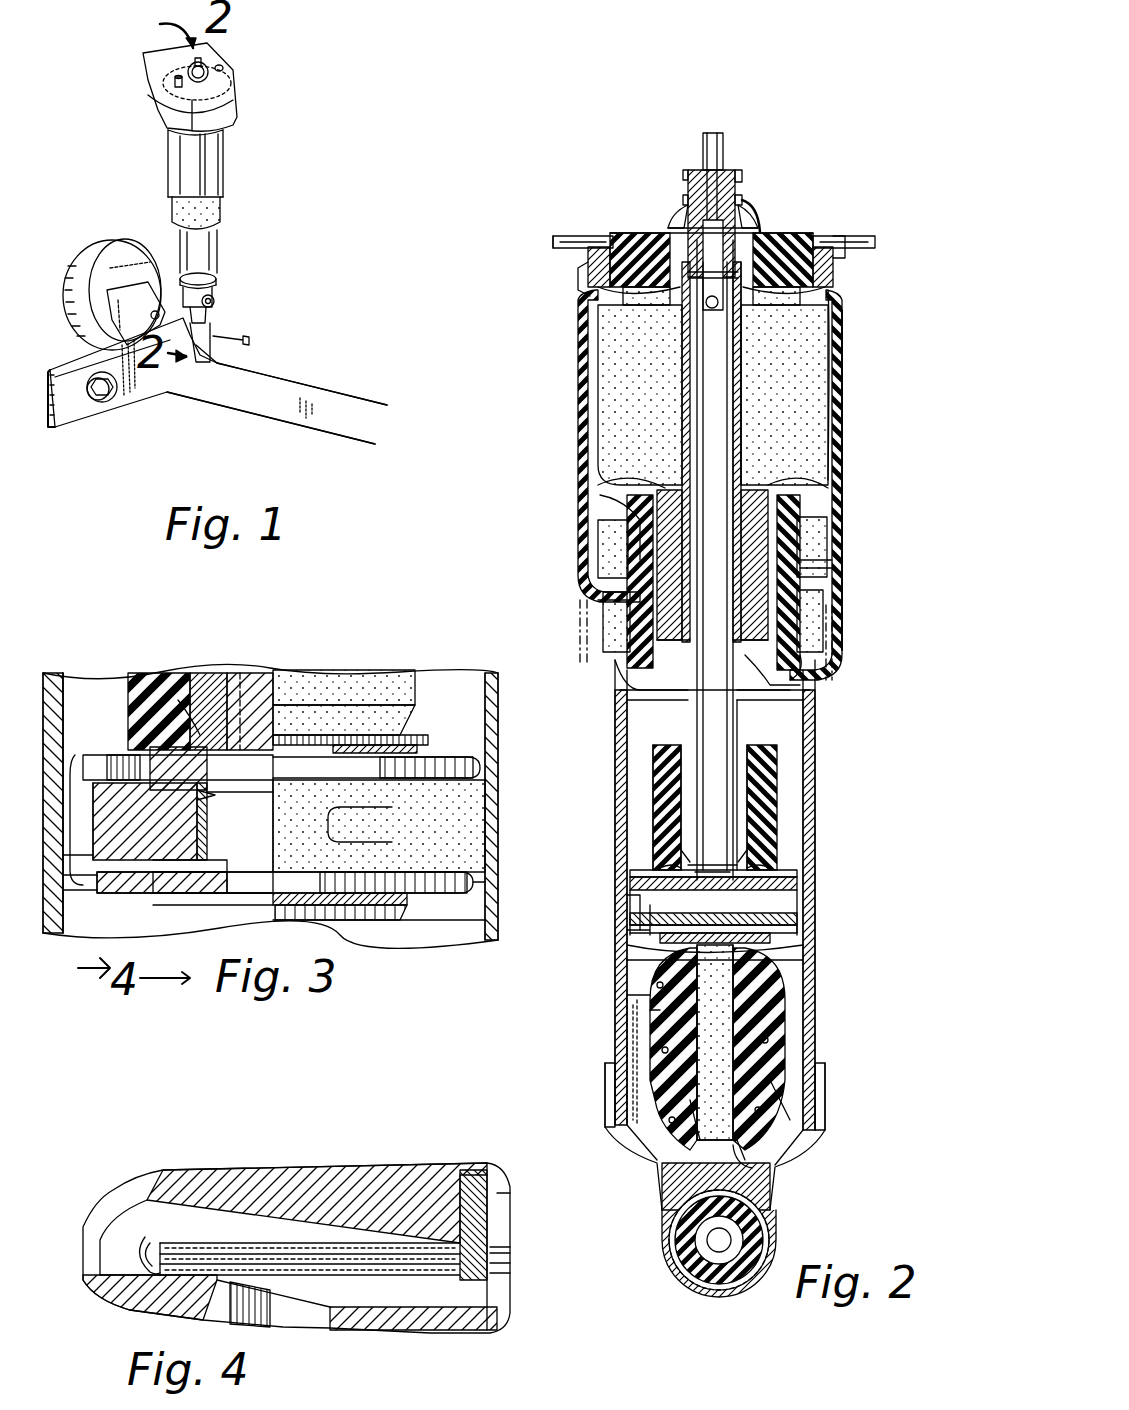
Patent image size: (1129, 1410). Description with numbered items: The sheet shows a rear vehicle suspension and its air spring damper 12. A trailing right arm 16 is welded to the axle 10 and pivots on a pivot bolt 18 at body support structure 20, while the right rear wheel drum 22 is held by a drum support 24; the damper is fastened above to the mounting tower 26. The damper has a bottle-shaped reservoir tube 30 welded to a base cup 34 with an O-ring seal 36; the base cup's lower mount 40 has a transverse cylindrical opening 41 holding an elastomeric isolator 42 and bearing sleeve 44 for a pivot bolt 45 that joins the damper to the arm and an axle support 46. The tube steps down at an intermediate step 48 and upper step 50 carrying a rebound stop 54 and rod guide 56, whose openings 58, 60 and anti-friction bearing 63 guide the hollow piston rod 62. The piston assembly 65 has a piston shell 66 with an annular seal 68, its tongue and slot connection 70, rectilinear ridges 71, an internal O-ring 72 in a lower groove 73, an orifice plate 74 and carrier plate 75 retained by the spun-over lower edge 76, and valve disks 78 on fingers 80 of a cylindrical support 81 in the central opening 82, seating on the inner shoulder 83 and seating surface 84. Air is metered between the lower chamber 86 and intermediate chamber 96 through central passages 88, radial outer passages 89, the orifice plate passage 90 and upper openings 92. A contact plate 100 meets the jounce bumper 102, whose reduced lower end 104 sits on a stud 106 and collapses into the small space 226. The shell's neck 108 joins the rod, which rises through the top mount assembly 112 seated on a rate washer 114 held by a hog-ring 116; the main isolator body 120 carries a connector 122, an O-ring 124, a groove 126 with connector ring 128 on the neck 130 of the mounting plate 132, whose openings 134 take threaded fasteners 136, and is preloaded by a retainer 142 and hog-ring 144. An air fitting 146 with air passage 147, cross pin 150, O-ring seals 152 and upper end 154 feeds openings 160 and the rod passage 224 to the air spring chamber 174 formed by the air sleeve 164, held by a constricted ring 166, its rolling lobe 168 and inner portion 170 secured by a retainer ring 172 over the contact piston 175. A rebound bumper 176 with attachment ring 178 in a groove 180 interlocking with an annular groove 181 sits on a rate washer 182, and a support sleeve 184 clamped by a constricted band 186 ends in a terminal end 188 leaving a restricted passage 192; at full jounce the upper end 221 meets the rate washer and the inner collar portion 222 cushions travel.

In FIG. 1, the axle 10 is at (283, 372).
In FIG. 1, the air spring damper 12 is at (230, 204).
In FIG. 2, the air spring damper 12 is at (565, 420).
In FIG. 1, the right arm 16 is at (156, 387).
In FIG. 1, the pivot bolt 18 is at (108, 400).
In FIG. 1, the support structure 20 is at (70, 412).
In FIG. 1, the right rear wheel drum 22 is at (98, 245).
In FIG. 1, the drum support 24 is at (136, 308).
In FIG. 1, the mounting tower 26 is at (228, 99).
In FIG. 1, the reservoir tube 30 is at (210, 245).
In FIG. 2, the reservoir tube 30 is at (820, 995).
In FIG. 3, the reservoir tube 30 is at (500, 895).
In FIG. 1, the base cup 34 is at (219, 273).
In FIG. 2, the base cup 34 is at (822, 1140).
In FIG. 2, the O-ring seal 36 is at (830, 1110).
In FIG. 1, the lower mount 40 is at (216, 297).
In FIG. 2, the lower mount 40 is at (768, 1200).
In FIG. 2, the transverse cylindrical opening 41 is at (738, 1262).
In FIG. 2, the elastomeric isolator 42 is at (725, 1254).
In FIG. 2, the bearing sleeve 44 is at (705, 1282).
In FIG. 1, the pivot bolt 45 is at (238, 328).
In FIG. 1, the support 46 is at (203, 346).
In FIG. 2, the intermediate step 48 is at (815, 610).
In FIG. 2, the upper step 50 is at (812, 520).
In FIG. 2, the rebound stop 54 is at (790, 560).
In FIG. 2, the rod guide 56 is at (780, 488).
In FIG. 2, the opening 58 is at (808, 670).
In FIG. 2, the opening 60 is at (740, 462).
In FIG. 2, the piston rod 62 is at (772, 690).
In FIG. 3, the piston rod 62 is at (218, 680).
In FIG. 2, the anti-friction bearing 63 is at (680, 485).
In FIG. 2, the piston assembly 65 is at (805, 884).
In FIG. 3, the piston assembly 65 is at (450, 748).
In FIG. 2, the piston shell 66 is at (800, 905).
In FIG. 3, the piston shell 66 is at (97, 760).
In FIG. 2, the annular seal 68 is at (632, 908).
In FIG. 3, the annular seal 68 is at (445, 893).
In FIG. 3, the tongue and slot connection 70 is at (340, 810).
In FIG. 3, the rectilinear ridges 71 is at (80, 755).
In FIG. 3, the O-ring 72 is at (58, 933).
In FIG. 3, the lower groove 73 is at (140, 820).
In FIG. 2, the orifice plate 74 is at (660, 900).
In FIG. 3, the orifice plate 74 is at (205, 790).
In FIG. 4, the orifice plate 74 is at (350, 1200).
In FIG. 2, the carrier plate 75 is at (660, 950).
In FIG. 3, the carrier plate 75 is at (180, 893).
In FIG. 4, the carrier plate 75 is at (120, 1290).
In FIG. 3, the lower edge 76 is at (80, 860).
In FIG. 2, the valve disks 78 is at (628, 912).
In FIG. 3, the valve disks 78 is at (197, 795).
In FIG. 4, the valve disks 78 is at (150, 1243).
In FIG. 2, the fingers 80 is at (722, 1010).
In FIG. 3, the fingers 80 is at (272, 843).
In FIG. 4, the fingers 80 is at (475, 1290).
In FIG. 2, the cylindrical support 81 is at (680, 860).
In FIG. 3, the cylindrical support 81 is at (272, 800).
In FIG. 3, the central opening 82 is at (197, 830).
In FIG. 4, the central opening 82 is at (470, 1170).
In FIG. 3, the inner shoulder 83 is at (170, 868).
In FIG. 4, the inner shoulder 83 is at (400, 1270).
In FIG. 3, the seating surface 84 is at (100, 885).
In FIG. 4, the seating surface 84 is at (135, 1290).
In FIG. 2, the lower chamber 86 is at (640, 1040).
In FIG. 3, the lower chamber 86 is at (425, 925).
In FIG. 2, the central passages 88 is at (675, 948).
In FIG. 3, the central passages 88 is at (240, 893).
In FIG. 2, the radial outer passages 89 is at (775, 940).
In FIG. 3, the radial outer passages 89 is at (160, 905).
In FIG. 4, the radial outer passages 89 is at (258, 1300).
In FIG. 2, the orifice plate passage 90 is at (790, 918).
In FIG. 2, the upper openings 92 is at (797, 875).
In FIG. 3, the upper openings 92 is at (110, 755).
In FIG. 2, the intermediate chamber 96 is at (790, 720).
In FIG. 2, the contact plate 100 is at (790, 945).
In FIG. 3, the contact plate 100 is at (370, 920).
In FIG. 2, the jounce bumper 102 is at (790, 990).
In FIG. 2, the reduced lower end 104 is at (760, 1158).
In FIG. 2, the stud 106 is at (730, 1172).
In FIG. 3, the neck 108 is at (205, 700).
In FIG. 1, the top mount assembly 112 is at (226, 71).
In FIG. 2, the top mount assembly 112 is at (775, 228).
In FIG. 2, the rate washer 114 is at (760, 322).
In FIG. 2, the hog-ring 116 is at (784, 395).
In FIG. 2, the main isolator body 120 is at (805, 235).
In FIG. 2, the connector 122 is at (588, 262).
In FIG. 2, the O-ring 124 is at (655, 233).
In FIG. 2, the groove 126 is at (833, 268).
In FIG. 2, the connector ring 128 is at (625, 300).
In FIG. 2, the neck 130 is at (842, 340).
In FIG. 2, the mounting plate 132 is at (552, 234).
In FIG. 2, the openings 134 is at (568, 236).
In FIG. 1, the threaded fasteners 136 is at (178, 77).
In FIG. 2, the retainer 142 is at (748, 220).
In FIG. 2, the hog-ring 144 is at (742, 180).
In FIG. 2, the air fitting 146 is at (730, 170).
In FIG. 2, the air passage 147 is at (758, 225).
In FIG. 2, the cross pin 150 is at (706, 304).
In FIG. 2, the O-ring seals 152 is at (688, 175).
In FIG. 2, the upper end 154 is at (713, 133).
In FIG. 2, the openings 160 is at (700, 310).
In FIG. 2, the air sleeve 164 is at (845, 412).
In FIG. 2, the constricted ring 166 is at (585, 278).
In FIG. 2, the rolling lobe 168 is at (632, 588).
In FIG. 2, the inner portion 170 is at (612, 548).
In FIG. 2, the retainer ring 172 is at (612, 500).
In FIG. 2, the air spring chamber 174 is at (610, 372).
In FIG. 2, the contact piston 175 is at (612, 615).
In FIG. 2, the rebound bumper 176 is at (770, 765).
In FIG. 3, the rebound bumper 176 is at (330, 670).
In FIG. 2, the attachment ring 178 is at (660, 830).
In FIG. 3, the attachment ring 178 is at (178, 690).
In FIG. 2, the groove 180 is at (748, 830).
In FIG. 3, the groove 180 is at (259, 711).
In FIG. 2, the annular groove 181 is at (712, 865).
In FIG. 3, the annular groove 181 is at (232, 700).
In FIG. 2, the rate washer 182 is at (775, 868).
In FIG. 3, the rate washer 182 is at (420, 735).
In FIG. 2, the support sleeve 184 is at (845, 382).
In FIG. 2, the constricted band 186 is at (848, 256).
In FIG. 2, the terminal end 188 is at (840, 626).
In FIG. 2, the restricted passage 192 is at (600, 648).
In FIG. 3, the restricted passage 192 is at (510, 645).
In FIG. 2, the upper end 221 is at (650, 485).
In FIG. 2, the inner collar portion 222 is at (752, 225).
In FIG. 2, the passage 224 is at (745, 410).
In FIG. 2, the small space 226 is at (665, 1135).